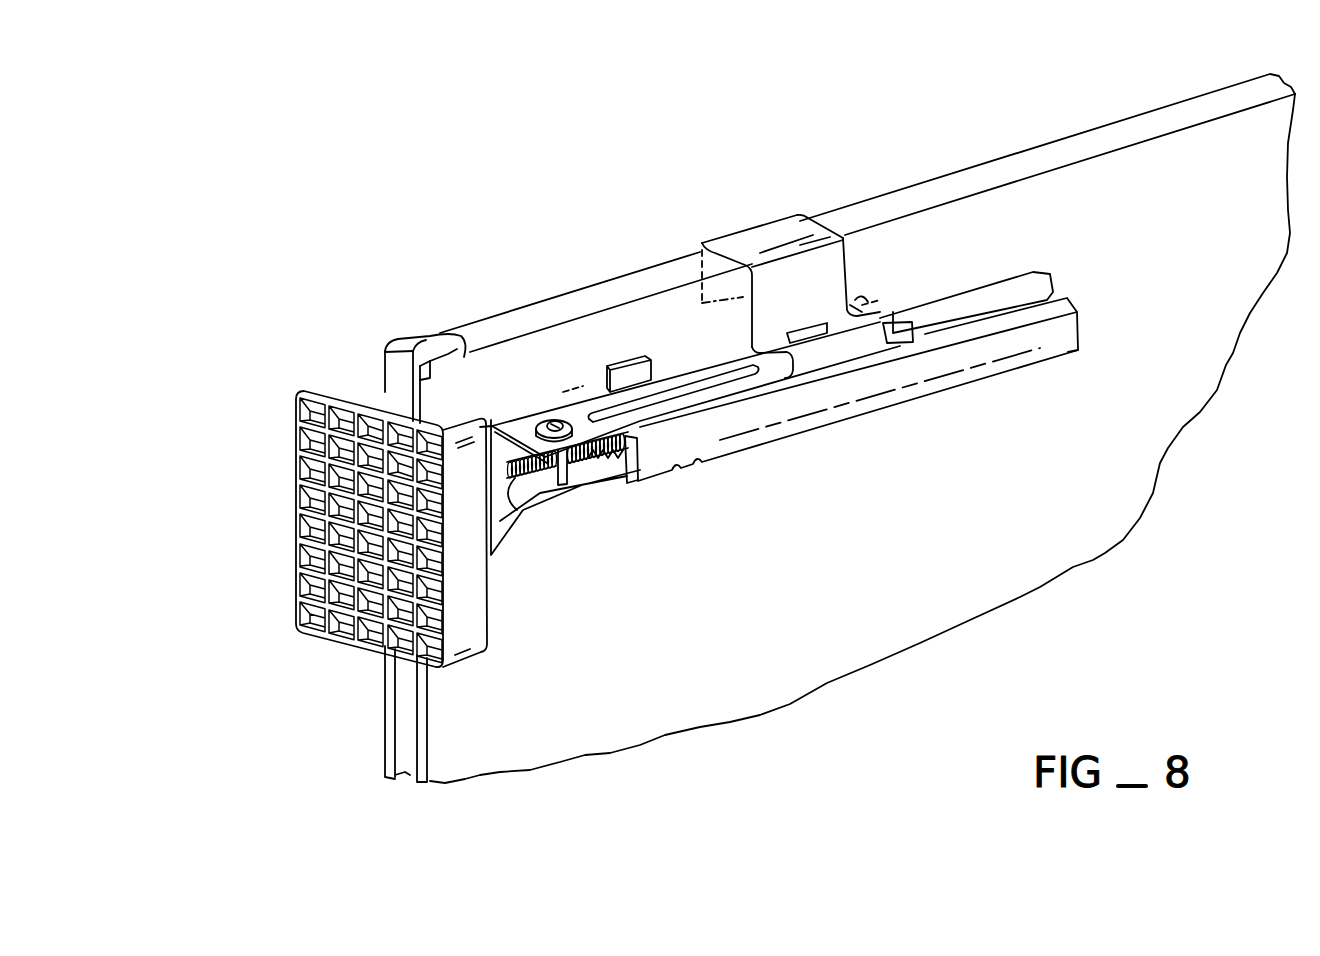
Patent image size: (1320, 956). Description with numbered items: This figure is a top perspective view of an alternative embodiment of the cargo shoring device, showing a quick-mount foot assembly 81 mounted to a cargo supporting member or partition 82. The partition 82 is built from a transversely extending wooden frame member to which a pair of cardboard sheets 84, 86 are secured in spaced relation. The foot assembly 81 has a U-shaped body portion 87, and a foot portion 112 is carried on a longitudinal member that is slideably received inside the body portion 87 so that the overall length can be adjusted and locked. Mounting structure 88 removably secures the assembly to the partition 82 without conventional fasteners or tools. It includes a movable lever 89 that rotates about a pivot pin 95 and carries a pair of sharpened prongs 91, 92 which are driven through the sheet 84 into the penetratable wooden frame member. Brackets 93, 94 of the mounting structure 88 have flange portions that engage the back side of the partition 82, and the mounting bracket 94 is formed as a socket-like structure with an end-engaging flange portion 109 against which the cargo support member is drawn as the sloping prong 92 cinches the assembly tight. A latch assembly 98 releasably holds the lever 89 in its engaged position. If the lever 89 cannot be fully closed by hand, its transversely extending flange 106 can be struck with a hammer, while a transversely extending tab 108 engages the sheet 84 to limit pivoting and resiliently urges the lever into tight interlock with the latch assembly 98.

The quick-mount foot assembly 81 is at (790, 452).
The cargo supporting member or partition 82 is at (927, 238).
The sheet 84 is at (428, 702).
The sheet 86 is at (385, 740).
The body portion 87 is at (528, 428).
The mounting structure 88 is at (413, 326).
The movable lever 89 is at (680, 387).
The prong 91 is at (870, 303).
The prong 92 is at (573, 385).
The bracket 93 is at (828, 252).
The mounting bracket 94 is at (405, 346).
The pivot pin 95 is at (575, 432).
The latch assembly 98 is at (867, 292).
The transversely extending flange 106 is at (878, 340).
The transversely extending tab 108 is at (622, 365).
The end-engaging flange portion 109 is at (432, 379).
The foot portion 112 is at (296, 512).